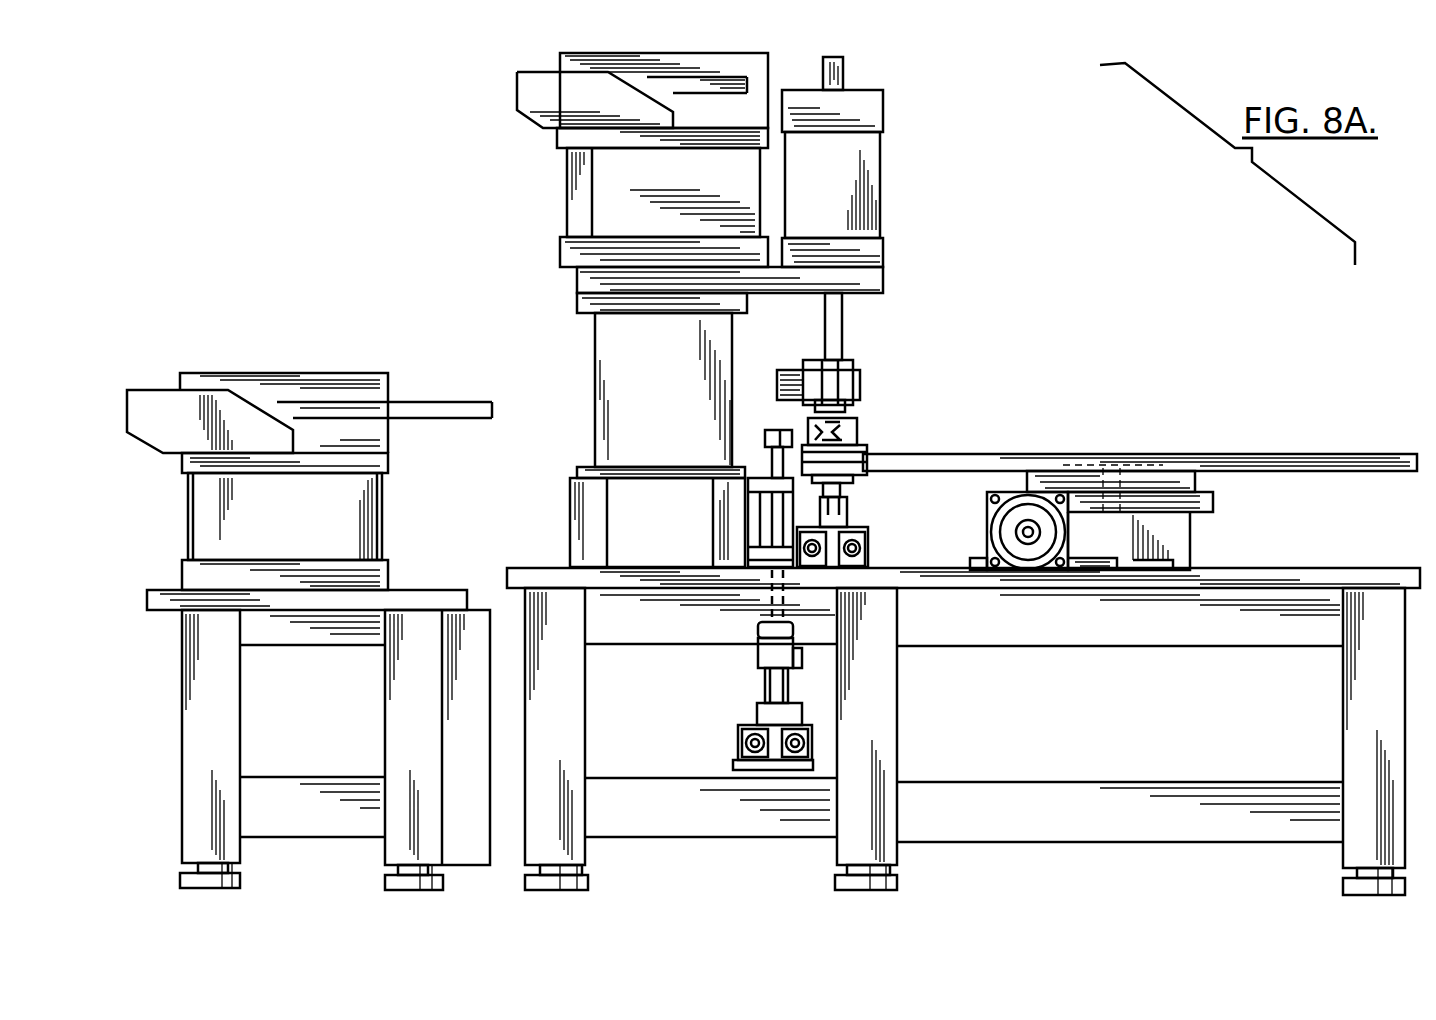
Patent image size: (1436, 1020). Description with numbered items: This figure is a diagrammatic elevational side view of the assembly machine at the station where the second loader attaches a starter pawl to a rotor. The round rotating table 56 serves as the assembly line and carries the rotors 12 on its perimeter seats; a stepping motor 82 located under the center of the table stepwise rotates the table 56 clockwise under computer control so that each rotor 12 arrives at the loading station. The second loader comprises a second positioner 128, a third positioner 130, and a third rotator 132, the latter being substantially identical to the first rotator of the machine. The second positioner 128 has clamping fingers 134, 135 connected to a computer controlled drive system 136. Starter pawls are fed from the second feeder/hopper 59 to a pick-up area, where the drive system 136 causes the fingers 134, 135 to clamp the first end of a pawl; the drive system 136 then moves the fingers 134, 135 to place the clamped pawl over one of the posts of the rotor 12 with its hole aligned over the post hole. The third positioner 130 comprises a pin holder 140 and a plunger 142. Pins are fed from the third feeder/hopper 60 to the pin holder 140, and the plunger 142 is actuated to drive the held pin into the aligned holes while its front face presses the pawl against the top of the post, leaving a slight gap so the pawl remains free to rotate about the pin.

The rotor 12 is at (855, 432).
The rotating table 56 is at (1335, 457).
The second feeder/hopper 59 is at (292, 373).
The third feeder/hopper 60 is at (560, 58).
The stepping motor 82 is at (1190, 532).
The second positioner 128 is at (763, 437).
The third positioner 130 is at (860, 390).
The third rotator 132 is at (867, 532).
The clamping finger 134 is at (780, 433).
The clamping finger 135 is at (777, 455).
The computer controlled drive system 136 is at (738, 732).
The pin holder 140 is at (816, 208).
The plunger 142 is at (837, 388).